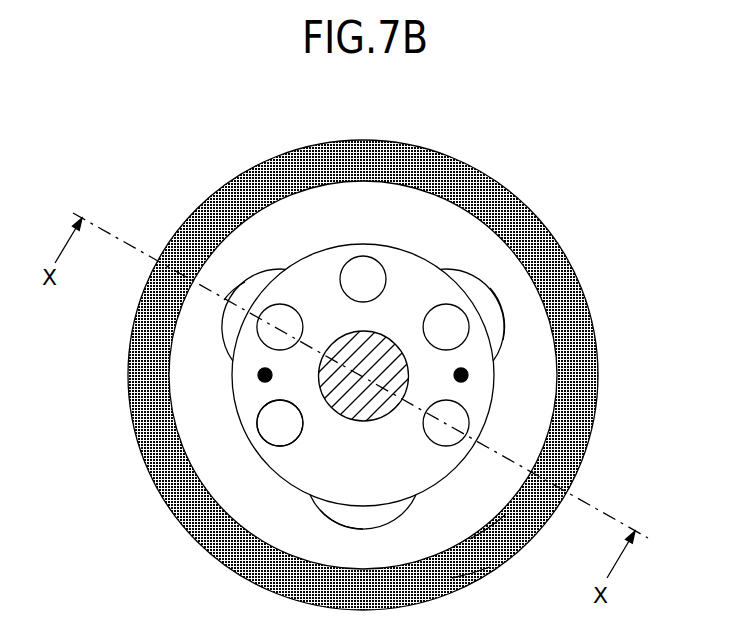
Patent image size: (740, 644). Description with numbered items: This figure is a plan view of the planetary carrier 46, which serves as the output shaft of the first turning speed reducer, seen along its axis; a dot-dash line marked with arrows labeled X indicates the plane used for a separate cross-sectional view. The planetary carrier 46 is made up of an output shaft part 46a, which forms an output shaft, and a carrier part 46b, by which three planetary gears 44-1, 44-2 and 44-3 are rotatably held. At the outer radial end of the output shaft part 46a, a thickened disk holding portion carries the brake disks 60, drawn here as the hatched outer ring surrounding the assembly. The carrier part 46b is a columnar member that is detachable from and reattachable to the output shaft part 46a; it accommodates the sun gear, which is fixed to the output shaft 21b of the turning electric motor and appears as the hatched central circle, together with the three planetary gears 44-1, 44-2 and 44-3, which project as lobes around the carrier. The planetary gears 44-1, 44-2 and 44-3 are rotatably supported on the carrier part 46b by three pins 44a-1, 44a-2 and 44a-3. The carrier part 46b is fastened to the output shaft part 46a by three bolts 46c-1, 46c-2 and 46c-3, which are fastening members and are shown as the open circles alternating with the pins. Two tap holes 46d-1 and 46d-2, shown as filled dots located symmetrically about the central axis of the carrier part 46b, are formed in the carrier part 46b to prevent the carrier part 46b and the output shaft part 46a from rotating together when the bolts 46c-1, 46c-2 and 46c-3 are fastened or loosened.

The brake disks 60 is at (452, 154).
The planetary carrier 46 is at (234, 222).
The output shaft part 46a is at (466, 572).
The carrier part 46b is at (487, 529).
The bolt 46c-1 is at (258, 432).
The bolt 46c-2 is at (462, 420).
The bolt 46c-3 is at (345, 262).
The tap hole 46d-1 is at (258, 378).
The tap hole 46d-2 is at (468, 375).
The planetary gear 44-1 is at (248, 277).
The planetary gear 44-2 is at (331, 516).
The planetary gear 44-3 is at (490, 288).
The pin 44a-1 is at (233, 296).
The pin 44a-2 is at (341, 476).
The pin 44a-3 is at (480, 318).
The output shaft 21b is at (382, 336).